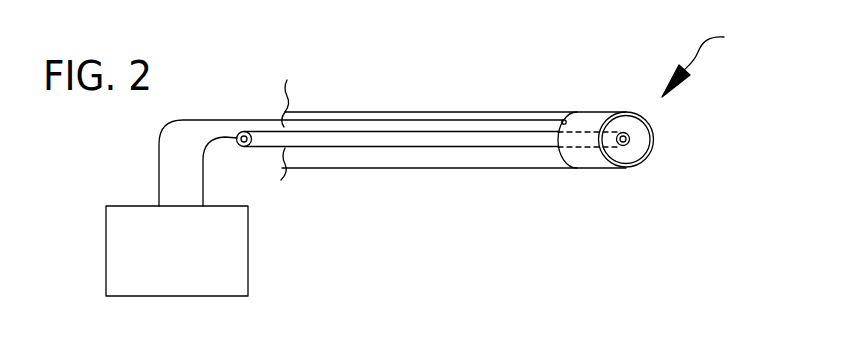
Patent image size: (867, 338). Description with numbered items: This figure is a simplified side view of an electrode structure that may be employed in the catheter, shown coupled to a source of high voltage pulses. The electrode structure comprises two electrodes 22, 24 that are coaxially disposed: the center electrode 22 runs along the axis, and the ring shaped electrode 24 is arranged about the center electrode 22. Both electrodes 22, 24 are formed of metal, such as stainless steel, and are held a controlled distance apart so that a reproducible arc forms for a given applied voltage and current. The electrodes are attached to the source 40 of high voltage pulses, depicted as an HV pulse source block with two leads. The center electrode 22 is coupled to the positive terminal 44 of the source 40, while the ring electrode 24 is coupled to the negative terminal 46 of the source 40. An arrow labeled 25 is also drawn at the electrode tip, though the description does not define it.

The center electrode 22 is at (630, 139).
The ring shaped electrode 24 is at (598, 110).
The plasma jet / discharge direction 25 is at (704, 63).
The source of high voltage pulses 40 is at (106, 252).
The positive terminal 44 is at (203, 195).
The negative terminal 46 is at (159, 196).